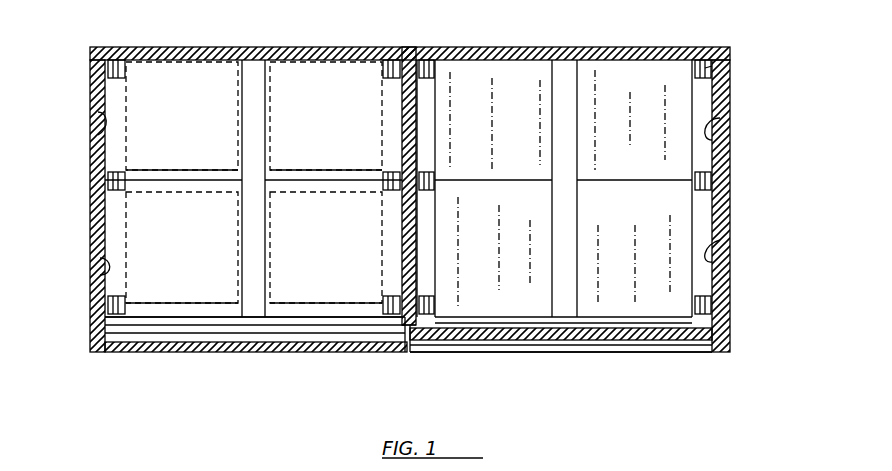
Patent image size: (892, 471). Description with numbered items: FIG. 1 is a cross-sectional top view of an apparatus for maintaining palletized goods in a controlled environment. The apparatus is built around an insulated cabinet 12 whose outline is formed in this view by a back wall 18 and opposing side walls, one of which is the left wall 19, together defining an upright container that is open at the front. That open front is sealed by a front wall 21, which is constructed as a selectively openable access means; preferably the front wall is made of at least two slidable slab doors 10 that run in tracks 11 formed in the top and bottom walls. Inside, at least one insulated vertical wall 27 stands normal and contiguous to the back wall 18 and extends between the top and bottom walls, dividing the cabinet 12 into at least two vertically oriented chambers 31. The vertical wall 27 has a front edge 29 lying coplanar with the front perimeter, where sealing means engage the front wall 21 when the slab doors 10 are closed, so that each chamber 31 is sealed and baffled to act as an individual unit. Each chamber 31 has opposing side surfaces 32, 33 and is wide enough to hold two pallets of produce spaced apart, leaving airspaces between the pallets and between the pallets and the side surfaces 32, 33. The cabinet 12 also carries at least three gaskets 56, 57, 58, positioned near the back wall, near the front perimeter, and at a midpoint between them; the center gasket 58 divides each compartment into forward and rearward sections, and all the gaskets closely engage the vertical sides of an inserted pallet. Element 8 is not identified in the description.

The storage container (dashed outline) 8 is at (137, 112).
The slidable slab doors 10 is at (256, 352).
The tracks 11 is at (253, 228).
The insulated cabinet 12 is at (114, 366).
The back wall 18 is at (270, 47).
The left wall 19 is at (90, 205).
The front wall 21 is at (574, 361).
The insulated vertical wall 27 is at (440, 47).
The front edge 29 is at (412, 352).
The vertically oriented chambers 31 is at (170, 84).
The side surface 32 is at (98, 112).
The side surface 33 is at (402, 129).
The gasket 56 is at (133, 58).
The gasket 57 is at (790, 200).
The center gasket 58 is at (795, 320).